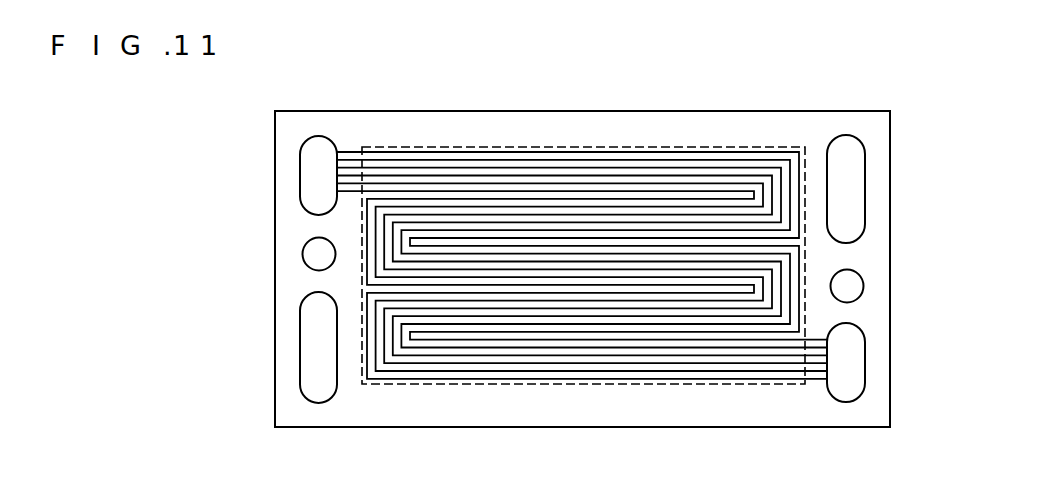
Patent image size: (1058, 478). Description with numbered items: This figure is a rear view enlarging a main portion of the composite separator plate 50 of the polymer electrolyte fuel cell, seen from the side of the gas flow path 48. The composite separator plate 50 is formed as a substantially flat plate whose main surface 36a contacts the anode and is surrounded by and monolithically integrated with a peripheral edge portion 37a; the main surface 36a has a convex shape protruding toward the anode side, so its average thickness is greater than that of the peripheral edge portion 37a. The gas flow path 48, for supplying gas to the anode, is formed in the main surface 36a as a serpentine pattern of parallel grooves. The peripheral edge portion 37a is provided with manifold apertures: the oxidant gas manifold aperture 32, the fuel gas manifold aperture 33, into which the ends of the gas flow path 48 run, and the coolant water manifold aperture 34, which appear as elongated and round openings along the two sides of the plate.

The composite separator plate 50 is at (582, 233).
The peripheral edge portion 37a is at (500, 127).
The main surface 36a is at (430, 147).
The gas flow path 48 is at (382, 155).
The fuel gas manifold aperture 33 is at (313, 180).
The oxidant gas manifold aperture 32 is at (320, 360).
The coolant water manifold aperture 34 is at (312, 255).